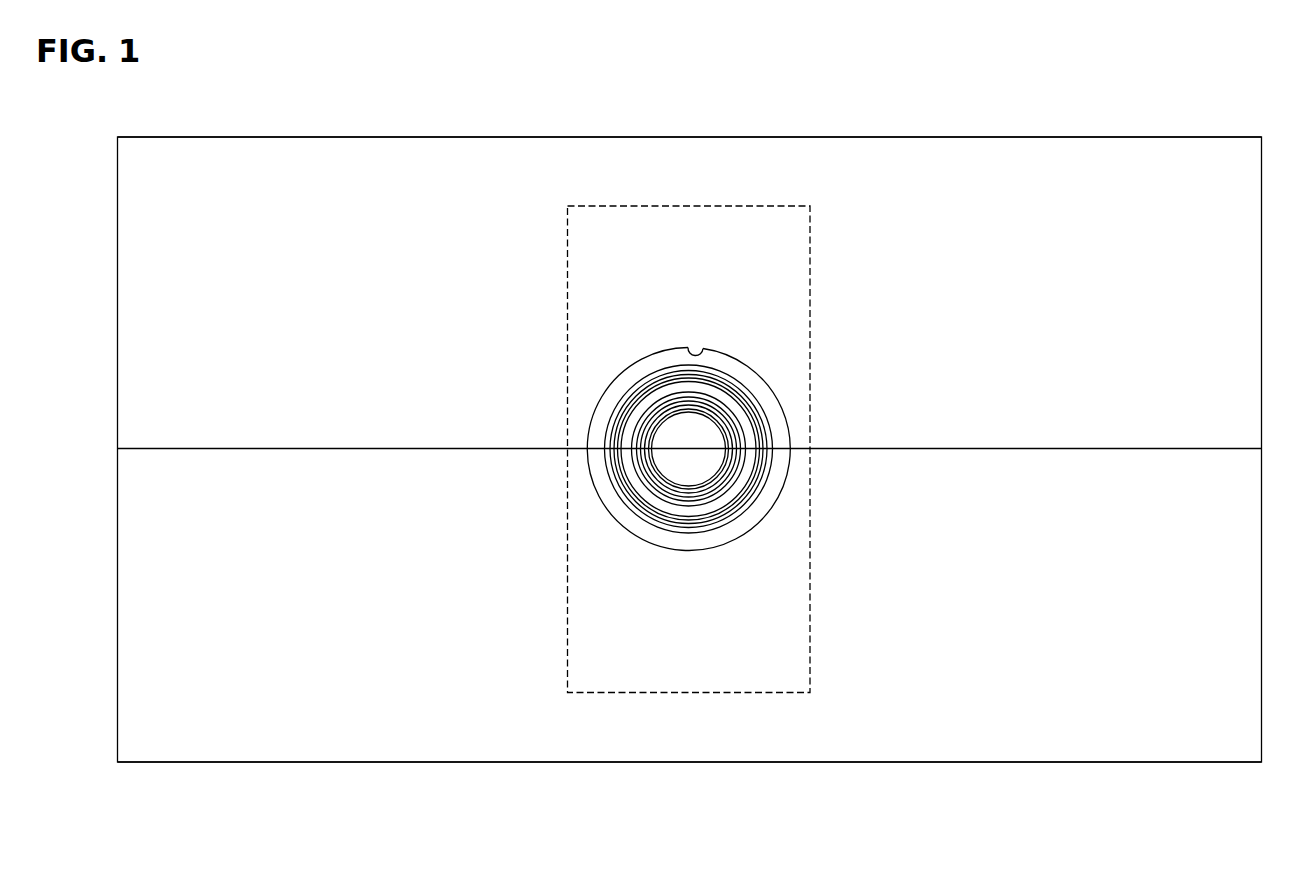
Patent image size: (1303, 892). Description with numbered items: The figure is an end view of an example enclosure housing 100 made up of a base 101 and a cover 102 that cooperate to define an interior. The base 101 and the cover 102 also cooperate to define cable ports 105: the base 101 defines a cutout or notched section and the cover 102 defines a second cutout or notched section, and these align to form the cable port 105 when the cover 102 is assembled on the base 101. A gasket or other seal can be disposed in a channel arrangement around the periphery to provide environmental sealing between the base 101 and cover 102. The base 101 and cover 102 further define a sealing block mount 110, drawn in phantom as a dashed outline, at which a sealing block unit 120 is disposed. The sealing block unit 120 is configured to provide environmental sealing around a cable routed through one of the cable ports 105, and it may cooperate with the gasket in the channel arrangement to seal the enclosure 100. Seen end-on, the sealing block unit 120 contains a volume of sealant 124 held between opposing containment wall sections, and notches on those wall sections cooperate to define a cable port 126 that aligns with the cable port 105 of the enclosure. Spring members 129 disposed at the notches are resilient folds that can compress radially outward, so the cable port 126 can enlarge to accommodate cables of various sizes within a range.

The enclosure housing 100 is at (1151, 116).
The base 101 is at (1053, 762).
The cover 102 is at (990, 137).
The cable port 105 is at (704, 351).
The sealing block mount 110 is at (810, 365).
The sealing block unit 120 is at (625, 426).
The volume of sealant 124 is at (705, 446).
The cable port 126 is at (655, 470).
The spring member 129 is at (710, 507).